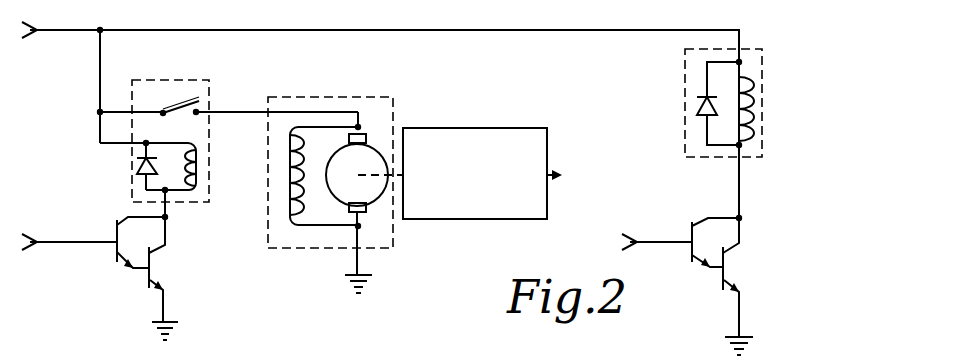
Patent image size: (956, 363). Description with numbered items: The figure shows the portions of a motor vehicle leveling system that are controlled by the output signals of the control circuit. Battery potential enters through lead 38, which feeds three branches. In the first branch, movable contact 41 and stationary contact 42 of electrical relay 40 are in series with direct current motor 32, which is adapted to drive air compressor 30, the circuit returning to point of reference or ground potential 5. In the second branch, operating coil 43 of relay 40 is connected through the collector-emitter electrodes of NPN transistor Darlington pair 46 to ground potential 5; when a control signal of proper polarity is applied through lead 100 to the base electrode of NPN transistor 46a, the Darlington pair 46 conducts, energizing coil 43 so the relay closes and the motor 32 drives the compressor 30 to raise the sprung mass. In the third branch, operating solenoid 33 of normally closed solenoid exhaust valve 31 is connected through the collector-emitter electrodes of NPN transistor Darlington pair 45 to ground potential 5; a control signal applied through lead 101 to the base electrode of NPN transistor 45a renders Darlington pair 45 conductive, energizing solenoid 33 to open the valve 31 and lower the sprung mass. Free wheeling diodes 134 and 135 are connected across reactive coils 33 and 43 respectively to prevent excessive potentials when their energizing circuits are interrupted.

The lead 38 is at (91, 31).
The electrical relay 40 is at (187, 80).
The movable contact 41 is at (174, 106).
The stationary contact 42 is at (197, 114).
The operating coil 43 is at (197, 177).
The diode 135 is at (137, 169).
The NPN transistor Darlington pair 46 is at (146, 236).
The NPN transistor 46a is at (117, 247).
The lead 100 is at (107, 212).
The direct current motor 32 is at (303, 97).
The air compressor 30 is at (463, 135).
The normally closed solenoid exhaust valve 31 is at (685, 73).
The diode 134 is at (699, 107).
The operating solenoid 33 is at (746, 78).
The NPN transistor Darlington pair 45 is at (716, 236).
The NPN transistor 45a is at (690, 250).
The lead 101 is at (687, 221).
The point of reference or ground potential 5 is at (178, 323).